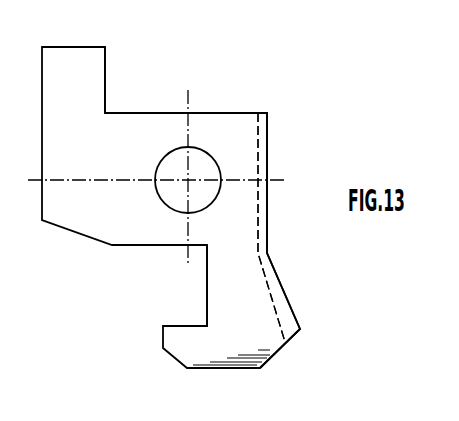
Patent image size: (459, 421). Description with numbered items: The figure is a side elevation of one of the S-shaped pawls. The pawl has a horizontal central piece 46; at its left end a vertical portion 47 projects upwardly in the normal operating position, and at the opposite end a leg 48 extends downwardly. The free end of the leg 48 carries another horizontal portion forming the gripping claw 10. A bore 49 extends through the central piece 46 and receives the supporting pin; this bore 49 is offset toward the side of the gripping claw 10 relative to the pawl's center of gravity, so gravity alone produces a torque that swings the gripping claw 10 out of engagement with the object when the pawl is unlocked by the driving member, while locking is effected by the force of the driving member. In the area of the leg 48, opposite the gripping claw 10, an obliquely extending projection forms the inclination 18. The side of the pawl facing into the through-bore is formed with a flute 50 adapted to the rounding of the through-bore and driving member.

The gripping claw 10 is at (173, 334).
The inclination 18 is at (300, 328).
The horizontal central piece 46 is at (226, 130).
The vertical portion 47 is at (78, 57).
The leg 48 is at (224, 280).
The bore 49 is at (167, 160).
The flute 50 is at (259, 162).